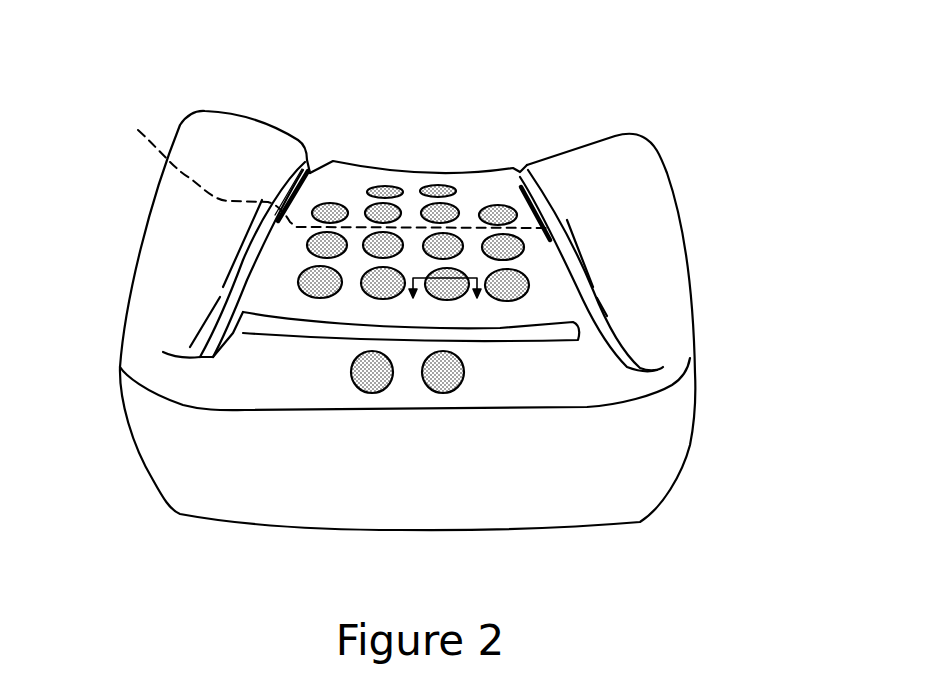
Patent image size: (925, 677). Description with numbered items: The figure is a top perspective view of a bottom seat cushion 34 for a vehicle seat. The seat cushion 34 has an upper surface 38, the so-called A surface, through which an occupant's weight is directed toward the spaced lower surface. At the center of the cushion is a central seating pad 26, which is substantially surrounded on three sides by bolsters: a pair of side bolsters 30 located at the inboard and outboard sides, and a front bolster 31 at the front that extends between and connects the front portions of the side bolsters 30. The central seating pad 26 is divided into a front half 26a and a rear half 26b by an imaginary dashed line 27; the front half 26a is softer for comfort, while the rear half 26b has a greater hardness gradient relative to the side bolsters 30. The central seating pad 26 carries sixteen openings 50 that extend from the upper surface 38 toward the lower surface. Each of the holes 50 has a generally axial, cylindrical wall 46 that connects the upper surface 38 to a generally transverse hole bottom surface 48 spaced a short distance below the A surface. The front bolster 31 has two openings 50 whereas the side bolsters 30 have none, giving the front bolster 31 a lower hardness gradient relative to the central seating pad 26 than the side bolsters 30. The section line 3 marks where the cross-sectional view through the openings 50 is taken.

The central seating pad 26 is at (465, 298).
The front half 26a is at (523, 313).
The rear half 26b is at (473, 183).
The imaginary dashed line 27 is at (326, 167).
The side bolsters 30 is at (172, 278).
The front bolster 31 is at (292, 385).
The seat cushion 34 is at (627, 109).
The upper surface 38 is at (287, 303).
The cylindrical wall 46 is at (440, 247).
The hole bottom surface 48 is at (443, 245).
The openings 50 is at (448, 318).
The section line 3- 3 is at (447, 301).